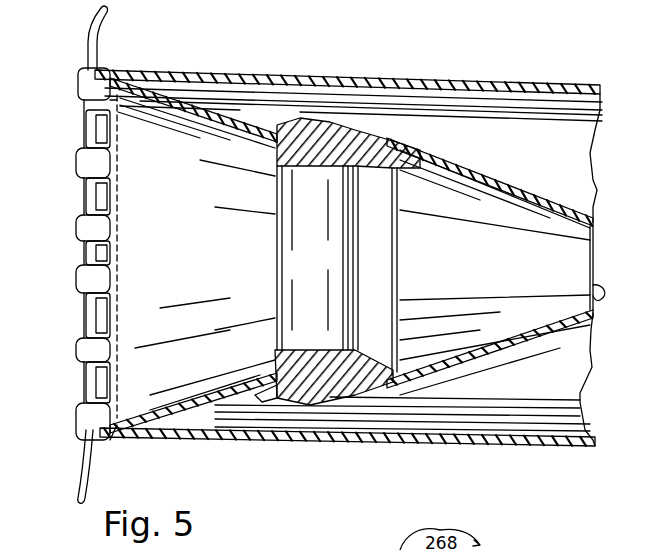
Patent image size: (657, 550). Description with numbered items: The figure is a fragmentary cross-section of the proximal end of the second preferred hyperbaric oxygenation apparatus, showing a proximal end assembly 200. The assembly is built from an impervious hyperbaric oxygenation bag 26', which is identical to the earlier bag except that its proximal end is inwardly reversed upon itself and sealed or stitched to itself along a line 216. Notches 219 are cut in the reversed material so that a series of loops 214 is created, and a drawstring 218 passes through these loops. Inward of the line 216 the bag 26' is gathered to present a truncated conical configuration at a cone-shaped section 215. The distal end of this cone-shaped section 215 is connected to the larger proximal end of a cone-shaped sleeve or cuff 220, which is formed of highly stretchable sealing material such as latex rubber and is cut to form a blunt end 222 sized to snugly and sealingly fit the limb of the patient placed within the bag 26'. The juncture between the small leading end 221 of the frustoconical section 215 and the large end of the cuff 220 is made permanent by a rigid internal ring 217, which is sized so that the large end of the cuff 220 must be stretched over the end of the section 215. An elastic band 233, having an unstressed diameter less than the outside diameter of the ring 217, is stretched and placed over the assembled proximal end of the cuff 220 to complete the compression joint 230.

The proximal end assembly 200 is at (238, 60).
The elastic band 233 is at (314, 122).
The impervious hyperbaric oxygenation bag 26' is at (348, 230).
The compression joint 230 is at (375, 120).
The notches 219 is at (87, 123).
The cone-shaped section 215 is at (216, 226).
The line 216 is at (118, 263).
The loops 214 is at (90, 283).
The cone-shaped sleeve or cuff 220 is at (515, 273).
The blunt end 222 is at (593, 292).
The rigid internal ring 217 is at (335, 349).
The small leading end 221 is at (267, 397).
The drawstring 218 is at (82, 465).